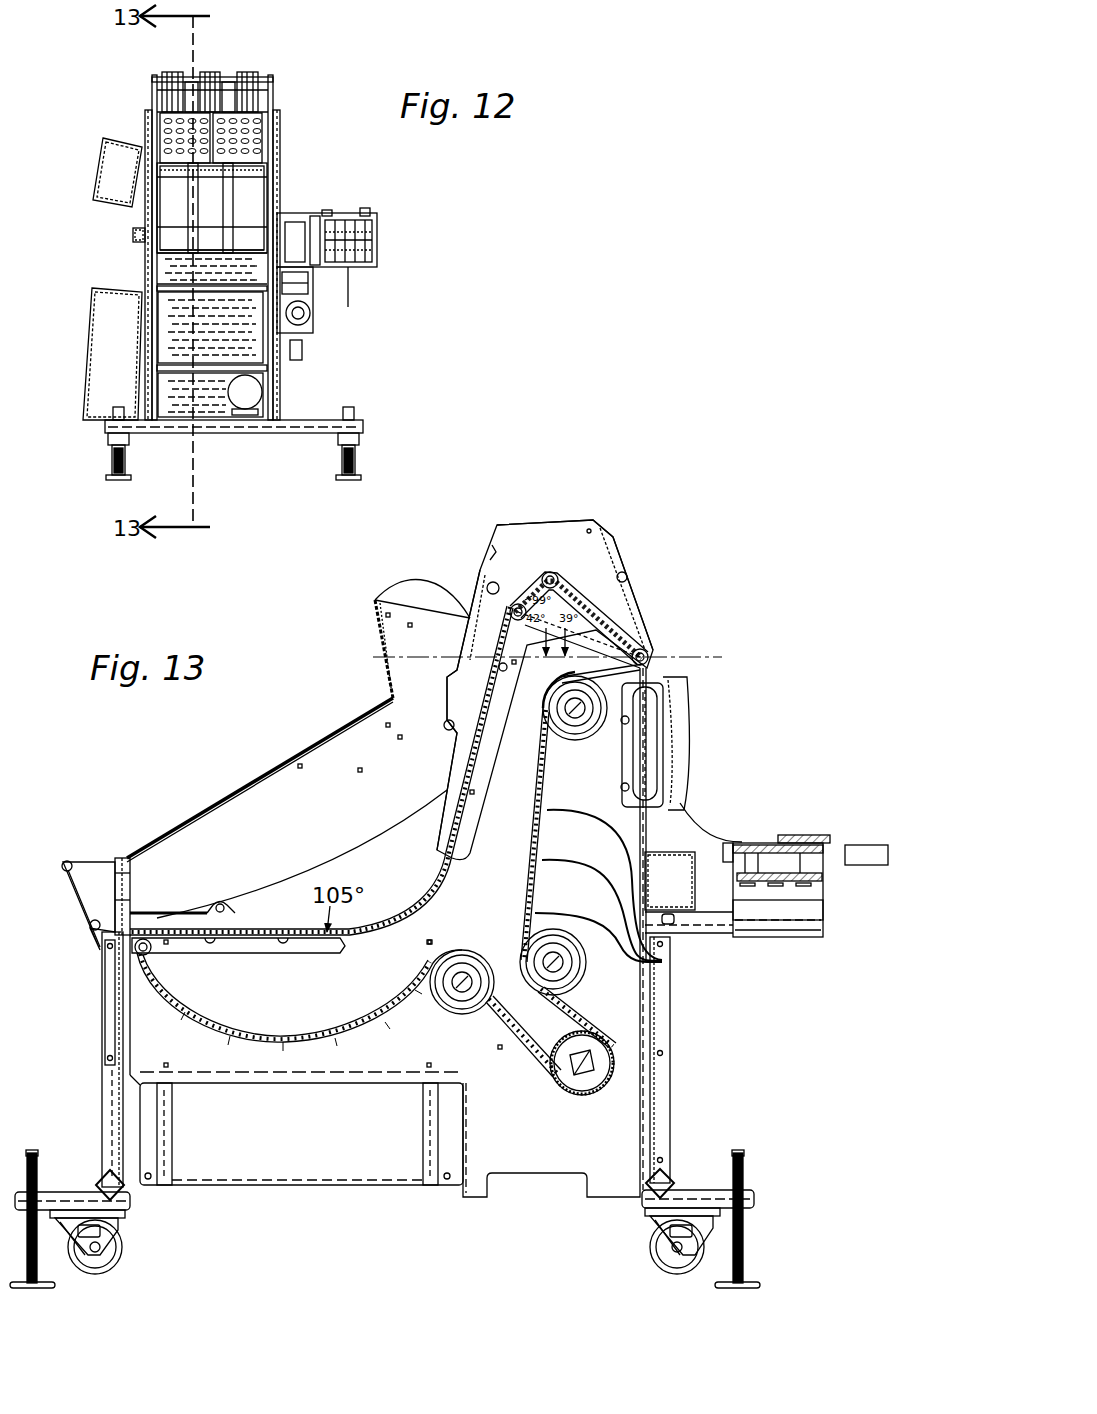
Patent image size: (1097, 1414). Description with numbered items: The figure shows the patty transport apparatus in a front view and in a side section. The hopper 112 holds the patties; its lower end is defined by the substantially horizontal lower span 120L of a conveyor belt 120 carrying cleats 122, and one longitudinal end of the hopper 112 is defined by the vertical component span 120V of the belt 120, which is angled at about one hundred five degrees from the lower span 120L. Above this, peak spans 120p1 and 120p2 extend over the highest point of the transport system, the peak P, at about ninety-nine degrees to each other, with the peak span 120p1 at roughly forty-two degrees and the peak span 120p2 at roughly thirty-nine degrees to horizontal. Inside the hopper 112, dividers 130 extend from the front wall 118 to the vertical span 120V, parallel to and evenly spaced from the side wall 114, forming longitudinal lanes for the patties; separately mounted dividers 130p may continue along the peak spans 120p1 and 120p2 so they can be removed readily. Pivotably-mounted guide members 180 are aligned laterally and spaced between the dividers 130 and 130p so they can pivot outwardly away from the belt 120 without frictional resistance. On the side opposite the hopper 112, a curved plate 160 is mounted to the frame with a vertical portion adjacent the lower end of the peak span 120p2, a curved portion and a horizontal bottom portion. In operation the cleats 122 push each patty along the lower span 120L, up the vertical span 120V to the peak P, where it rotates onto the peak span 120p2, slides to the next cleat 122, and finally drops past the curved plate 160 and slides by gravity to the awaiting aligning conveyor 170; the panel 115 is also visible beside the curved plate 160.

In FIG. 12, the guide member 180 is at (167, 68).
In FIG. 12, the divider 130 is at (198, 212).
In FIG. 13, the divider 130 is at (440, 843).
In FIG. 13, the peak P is at (565, 505).
In FIG. 13, the peak span 120p1 is at (520, 580).
In FIG. 13, the peak span 120p2 is at (596, 590).
In FIG. 13, the divider 130p is at (579, 604).
In FIG. 13, the side panel 115 is at (675, 690).
In FIG. 13, the curved plate 160 is at (665, 740).
In FIG. 13, the aligning conveyor 170 is at (792, 812).
In FIG. 13, the hopper 112 is at (228, 755).
In FIG. 13, the vertical component span 120V is at (458, 757).
In FIG. 13, the lower span 120L is at (255, 920).
In FIG. 13, the front wall 118 is at (128, 885).
In FIG. 13, the side wall 114 is at (379, 699).
In FIG. 13, the conveyor belt 120 is at (357, 1027).
In FIG. 13, the cleat 122 is at (662, 960).